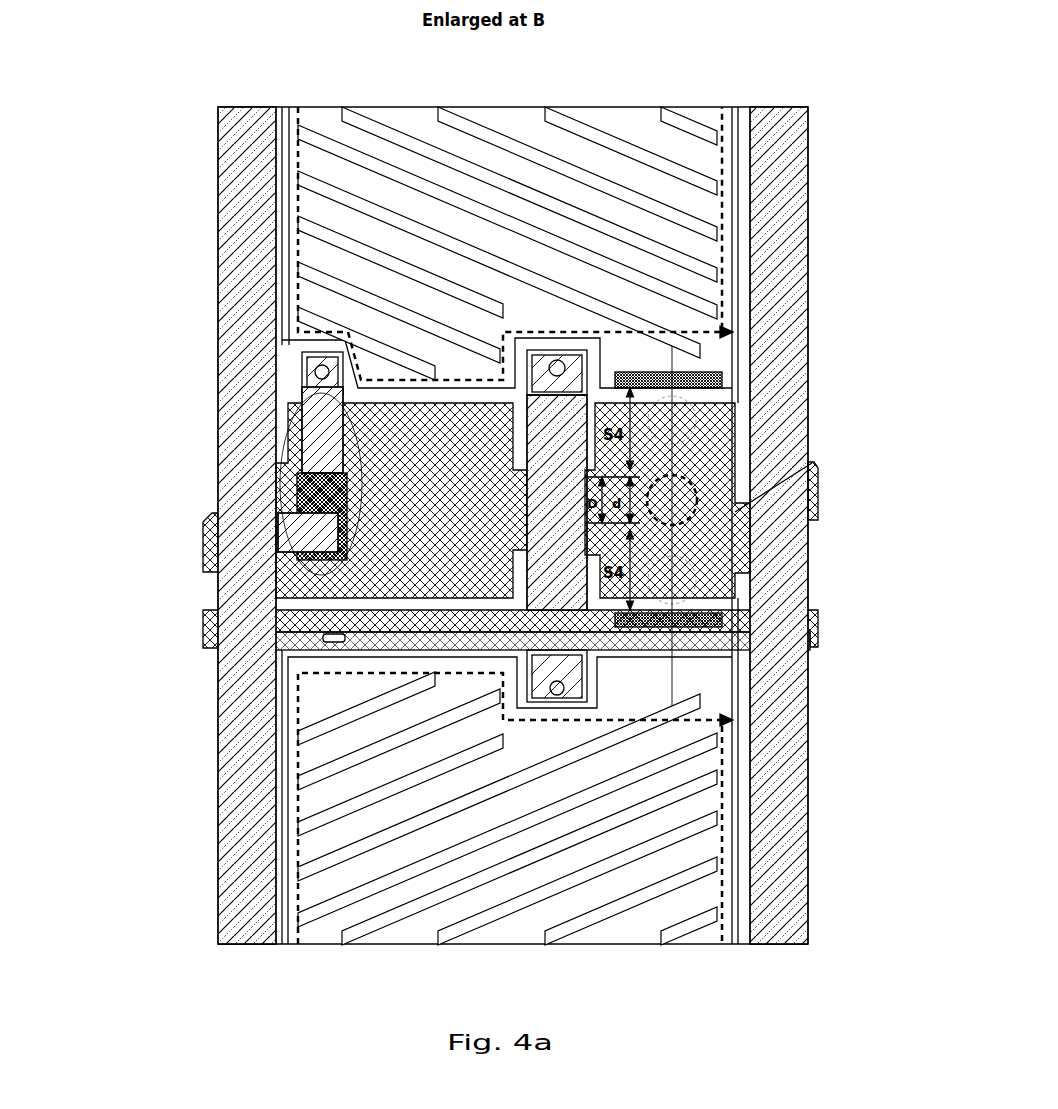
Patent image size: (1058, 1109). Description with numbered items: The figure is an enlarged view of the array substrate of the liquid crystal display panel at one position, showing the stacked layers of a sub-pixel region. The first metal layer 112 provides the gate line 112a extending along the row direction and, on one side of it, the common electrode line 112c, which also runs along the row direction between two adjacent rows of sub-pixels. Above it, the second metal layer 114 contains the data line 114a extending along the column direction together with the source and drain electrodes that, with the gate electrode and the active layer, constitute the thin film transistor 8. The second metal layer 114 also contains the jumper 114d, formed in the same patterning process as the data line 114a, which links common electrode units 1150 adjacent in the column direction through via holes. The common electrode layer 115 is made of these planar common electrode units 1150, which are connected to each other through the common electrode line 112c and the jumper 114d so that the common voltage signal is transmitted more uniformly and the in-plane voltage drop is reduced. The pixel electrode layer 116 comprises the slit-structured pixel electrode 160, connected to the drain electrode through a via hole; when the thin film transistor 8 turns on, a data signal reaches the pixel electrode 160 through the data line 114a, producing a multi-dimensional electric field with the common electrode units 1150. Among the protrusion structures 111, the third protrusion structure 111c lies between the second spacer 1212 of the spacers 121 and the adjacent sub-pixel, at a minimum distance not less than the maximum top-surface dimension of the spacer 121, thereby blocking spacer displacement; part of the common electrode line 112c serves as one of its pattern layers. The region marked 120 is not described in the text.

The pixel electrode 120 is at (718, 132).
The pixel electrode 160 is at (738, 143).
The pixel electrode layer 116 is at (843, 255).
The common electrode unit 1150 is at (738, 217).
The common electrode layer 115 is at (849, 255).
The data line 114a is at (220, 407).
The jumper 114d is at (527, 512).
The second metal layer 114 is at (426, 525).
The thin film transistor 8 is at (287, 453).
The gate line 112a is at (203, 540).
The common electrode line 112c is at (203, 630).
The first metal layer 112 is at (431, 585).
The third protrusion structure 111c is at (722, 374).
The protrusion structure 111 is at (622, 526).
The second spacer 1212 is at (697, 487).
The spacer 121 is at (757, 500).